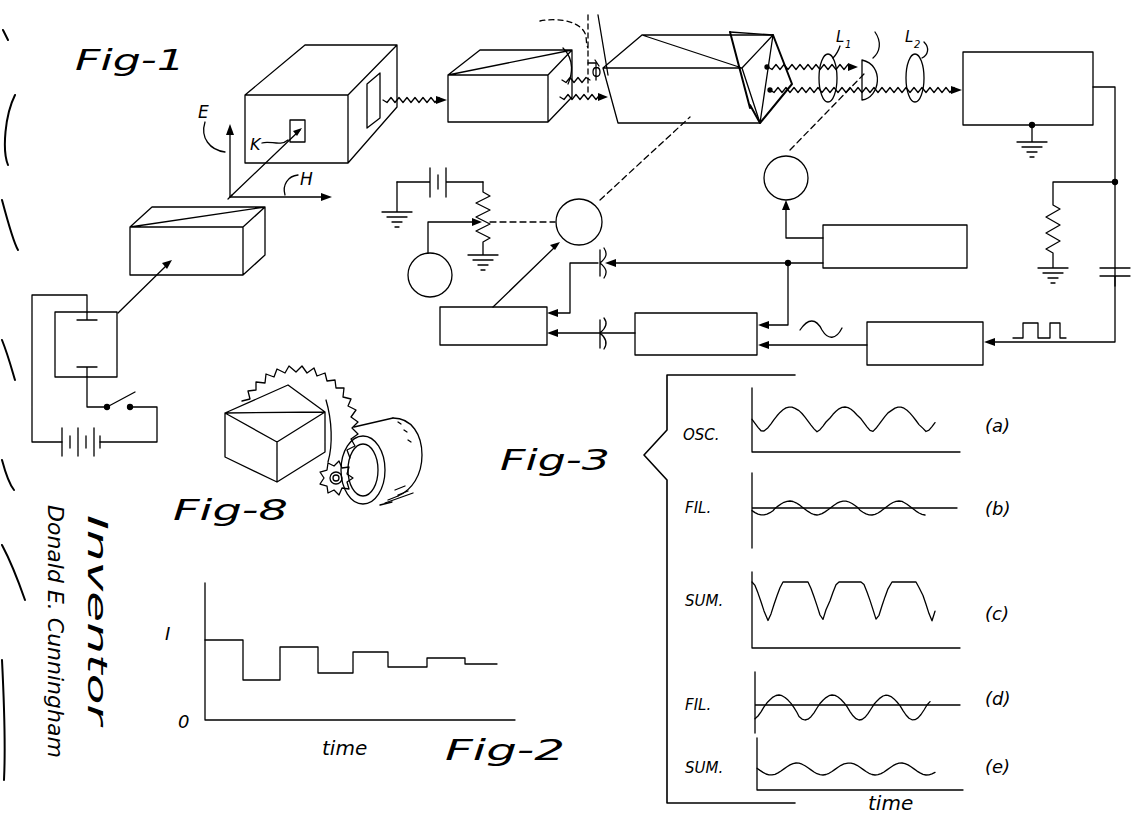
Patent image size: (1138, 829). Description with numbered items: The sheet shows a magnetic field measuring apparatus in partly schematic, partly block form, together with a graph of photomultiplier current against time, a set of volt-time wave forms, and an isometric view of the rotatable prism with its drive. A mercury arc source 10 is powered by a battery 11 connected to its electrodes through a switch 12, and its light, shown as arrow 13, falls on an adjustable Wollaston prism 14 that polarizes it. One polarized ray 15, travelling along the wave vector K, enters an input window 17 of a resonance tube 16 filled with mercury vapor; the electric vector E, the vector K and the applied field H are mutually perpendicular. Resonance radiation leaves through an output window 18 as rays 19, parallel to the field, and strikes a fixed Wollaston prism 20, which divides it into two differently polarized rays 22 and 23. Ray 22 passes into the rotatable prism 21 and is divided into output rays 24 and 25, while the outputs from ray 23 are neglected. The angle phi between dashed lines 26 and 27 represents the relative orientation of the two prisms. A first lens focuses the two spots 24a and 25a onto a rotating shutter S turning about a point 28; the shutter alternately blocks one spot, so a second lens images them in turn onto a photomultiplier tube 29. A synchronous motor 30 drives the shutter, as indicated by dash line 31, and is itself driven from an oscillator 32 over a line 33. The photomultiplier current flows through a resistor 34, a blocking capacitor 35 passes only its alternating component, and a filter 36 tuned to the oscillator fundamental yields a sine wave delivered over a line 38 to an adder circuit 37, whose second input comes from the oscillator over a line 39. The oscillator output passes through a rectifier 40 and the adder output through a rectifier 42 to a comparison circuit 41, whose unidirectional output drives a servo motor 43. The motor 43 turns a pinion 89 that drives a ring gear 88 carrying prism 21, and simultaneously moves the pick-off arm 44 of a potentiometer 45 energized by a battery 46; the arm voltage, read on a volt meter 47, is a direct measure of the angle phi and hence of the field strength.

In FIG. 1, the mercury arc source 10 is at (117, 356).
In FIG. 1, the battery 11 is at (96, 450).
In FIG. 1, the switch 12 is at (136, 392).
In FIG. 1, the light ray 13 is at (148, 290).
In FIG. 1, the adjustable prism 14 is at (240, 275).
In FIG. 1, the polarized ray 15 is at (228, 197).
In FIG. 1, the resonance tube 16 is at (334, 58).
In FIG. 1, the input window 17 is at (290, 128).
In FIG. 1, the output window 18 is at (392, 86).
In FIG. 1, the resonance radiation rays 19 is at (415, 103).
In FIG. 1, the Wollaston prism 20 is at (498, 50).
In FIG. 1, the rotatable prism 21 is at (662, 46).
In FIG. 8, the rotatable prism 21 is at (268, 407).
In FIG. 1, the output ray 22 is at (580, 102).
In FIG. 1, the output ray 23 is at (565, 56).
In FIG. 1, the output ray 24 is at (806, 96).
In FIG. 1, the light spot 24a is at (766, 66).
In FIG. 1, the light spot 25a is at (771, 89).
In FIG. 1, the output ray 25 is at (804, 64).
In FIG. 1, the dashed line 26 is at (553, 30).
In FIG. 1, the dashed line 27 is at (596, 33).
In FIG. 1, the axis point 28 is at (868, 88).
In FIG. 1, the photomultiplier tube 29 is at (1027, 52).
In FIG. 1, the synchronous A.-C. motor 30 is at (765, 170).
In FIG. 1, the dash line 31 is at (822, 120).
In FIG. 1, the oscillator 32 is at (910, 224).
In FIG. 1, the line 33 is at (786, 238).
In FIG. 1, the resistor 34 is at (1046, 226).
In FIG. 1, the blocking capacitor 35 is at (1112, 266).
In FIG. 1, the filter 36 is at (936, 322).
In FIG. 1, the adder circuit 37 is at (690, 313).
In FIG. 1, the line 38 is at (800, 348).
In FIG. 1, the line 39 is at (788, 297).
In FIG. 1, the rectifier 40 is at (606, 256).
In FIG. 1, the comparison circuit 41 is at (530, 334).
In FIG. 1, the rectifier 42 is at (604, 346).
In FIG. 1, the servo-mechanism motor 43 is at (573, 199).
In FIG. 8, the servo-mechanism motor 43 is at (410, 445).
In FIG. 1, the pick-off arm 44 is at (434, 224).
In FIG. 1, the potentiometer 45 is at (487, 206).
In FIG. 1, the battery 46 is at (440, 170).
In FIG. 1, the volt meter 47 is at (410, 264).
In FIG. 8, the ring gear 88 is at (333, 396).
In FIG. 8, the pinion 89 is at (340, 493).